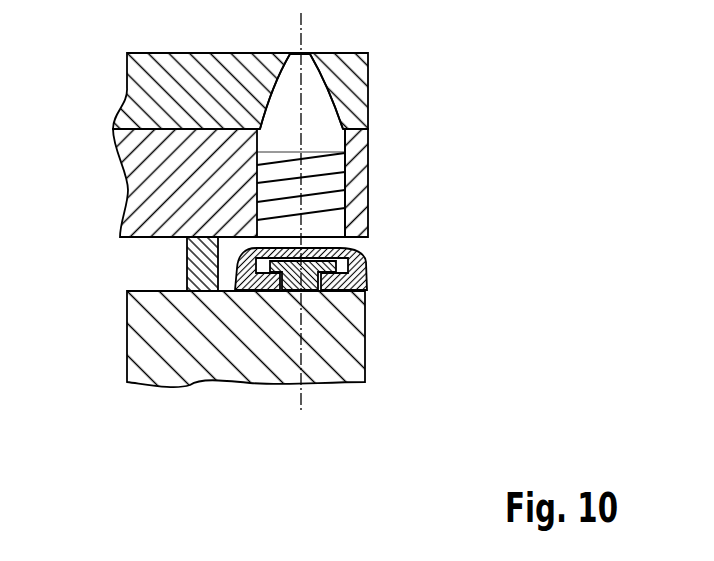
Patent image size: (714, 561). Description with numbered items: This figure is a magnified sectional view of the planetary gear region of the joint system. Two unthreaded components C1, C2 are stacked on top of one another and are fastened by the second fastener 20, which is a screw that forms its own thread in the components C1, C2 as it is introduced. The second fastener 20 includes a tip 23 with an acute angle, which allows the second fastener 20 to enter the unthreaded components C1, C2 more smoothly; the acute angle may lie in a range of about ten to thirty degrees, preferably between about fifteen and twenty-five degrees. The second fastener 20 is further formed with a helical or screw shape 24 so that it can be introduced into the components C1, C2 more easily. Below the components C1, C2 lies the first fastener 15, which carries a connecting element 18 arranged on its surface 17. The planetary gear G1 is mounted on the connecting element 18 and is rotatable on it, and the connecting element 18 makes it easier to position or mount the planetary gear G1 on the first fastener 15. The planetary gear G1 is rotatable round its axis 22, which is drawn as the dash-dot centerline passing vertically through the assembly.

The unthreaded component C1 is at (140, 87).
The unthreaded component C2 is at (150, 195).
The first fastener 15 is at (150, 340).
The surface 17 is at (148, 284).
The connecting element 18 is at (322, 282).
The second fastener 20 is at (328, 185).
The axis 22 is at (304, 24).
The tip 23 is at (318, 102).
The screw shape 24 is at (360, 156).
The planetary gear G1 is at (350, 246).